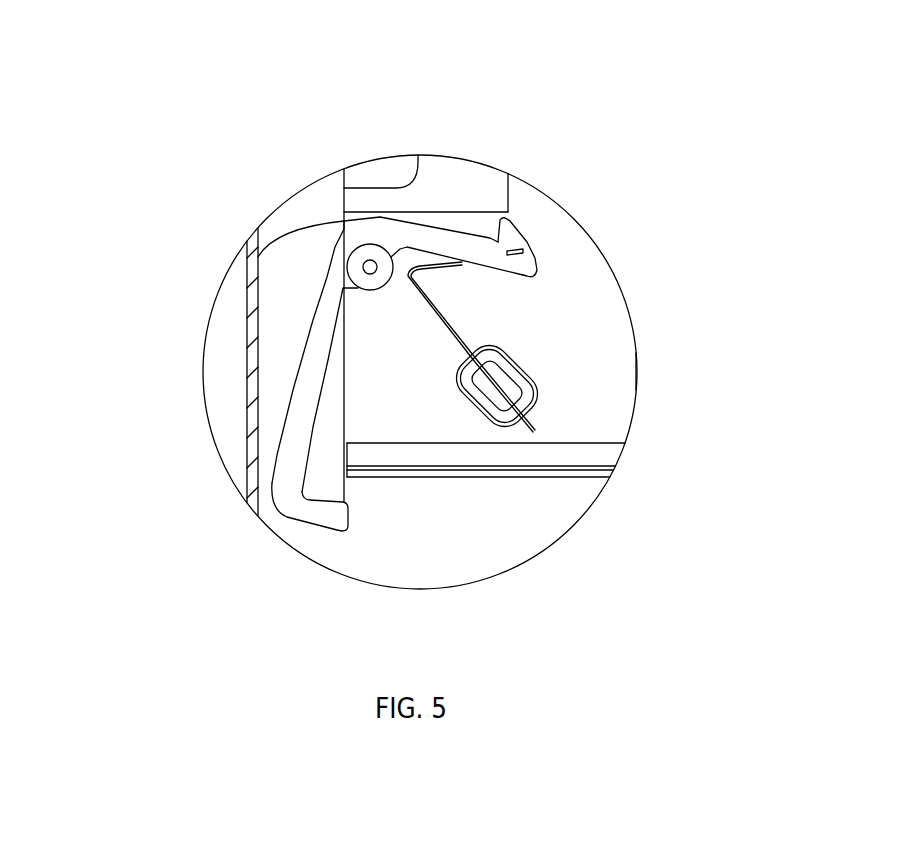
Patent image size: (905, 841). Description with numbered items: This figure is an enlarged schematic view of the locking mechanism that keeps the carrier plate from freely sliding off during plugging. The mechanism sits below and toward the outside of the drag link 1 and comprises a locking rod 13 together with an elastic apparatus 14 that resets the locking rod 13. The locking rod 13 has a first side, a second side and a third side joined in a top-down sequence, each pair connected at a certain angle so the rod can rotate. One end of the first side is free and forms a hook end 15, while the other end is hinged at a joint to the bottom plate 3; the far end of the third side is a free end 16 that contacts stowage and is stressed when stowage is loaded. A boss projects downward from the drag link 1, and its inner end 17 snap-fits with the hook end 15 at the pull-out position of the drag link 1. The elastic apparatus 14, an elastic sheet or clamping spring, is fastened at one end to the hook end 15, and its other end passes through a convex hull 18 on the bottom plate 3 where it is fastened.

The drag link 1 is at (362, 197).
The bottom plate 3 is at (592, 457).
The locking rod 13 is at (308, 393).
The elastic apparatus 14 is at (455, 333).
The hook end 15 is at (525, 240).
The free end 16 is at (310, 515).
The inner end 17 is at (508, 196).
The convex hull 18 is at (510, 380).